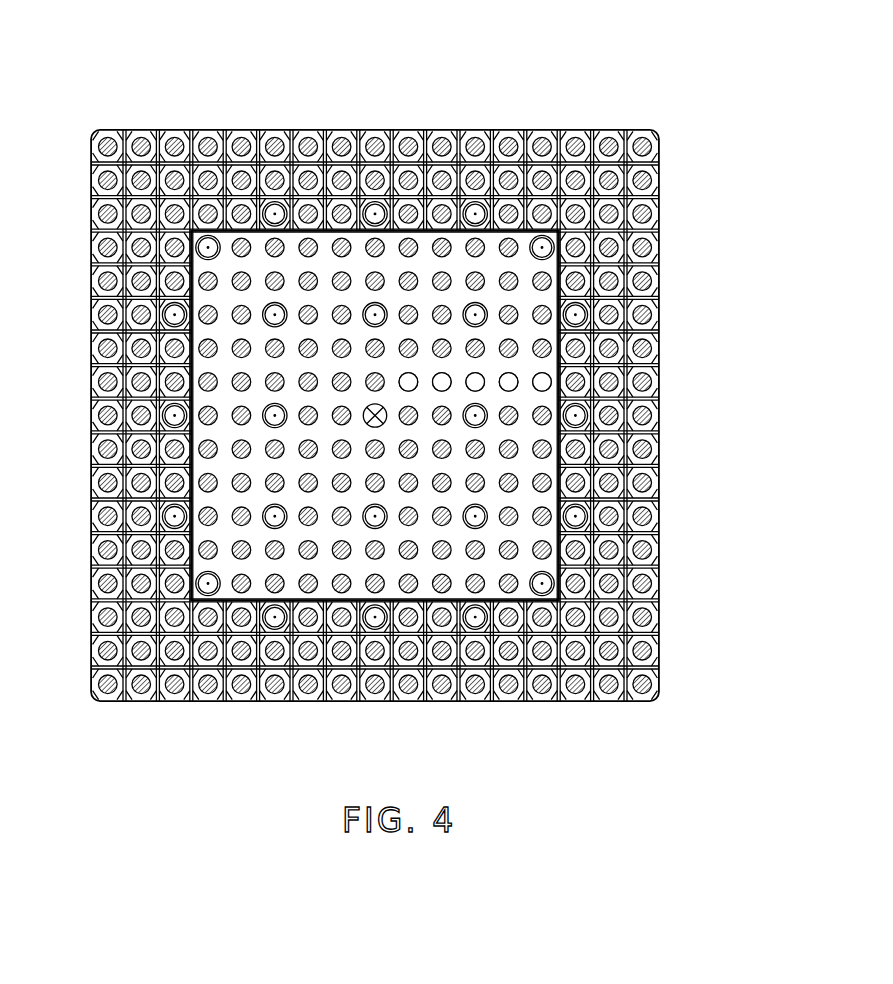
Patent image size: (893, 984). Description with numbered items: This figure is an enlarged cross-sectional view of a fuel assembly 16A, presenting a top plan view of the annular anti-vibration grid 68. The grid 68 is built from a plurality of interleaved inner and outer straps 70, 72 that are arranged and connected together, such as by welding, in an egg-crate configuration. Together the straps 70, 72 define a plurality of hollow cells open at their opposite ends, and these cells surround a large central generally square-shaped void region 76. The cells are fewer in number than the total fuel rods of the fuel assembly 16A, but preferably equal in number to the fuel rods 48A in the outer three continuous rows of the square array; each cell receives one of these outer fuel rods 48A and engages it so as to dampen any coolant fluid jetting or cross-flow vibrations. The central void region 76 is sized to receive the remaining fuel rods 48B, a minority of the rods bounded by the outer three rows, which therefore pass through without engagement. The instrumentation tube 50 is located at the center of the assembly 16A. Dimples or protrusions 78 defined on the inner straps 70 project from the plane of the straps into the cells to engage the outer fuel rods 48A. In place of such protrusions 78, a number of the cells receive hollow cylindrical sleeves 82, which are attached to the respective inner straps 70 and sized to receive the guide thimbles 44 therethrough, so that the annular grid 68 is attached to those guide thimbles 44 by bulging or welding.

The fuel assembly 16A is at (633, 107).
The guide thimbles 44 is at (237, 132).
The outer fuel rods 48A is at (297, 135).
The inner fuel rods 48B is at (595, 457).
The instrumentation tube 50 is at (364, 405).
The annular anti-vibration grid 68 is at (659, 248).
The inner straps 70 is at (210, 133).
The outer straps 72 is at (128, 130).
The central void region 76 is at (383, 597).
The protrusions 78 is at (595, 130).
The hollow cylindrical sleeves 82 is at (337, 132).